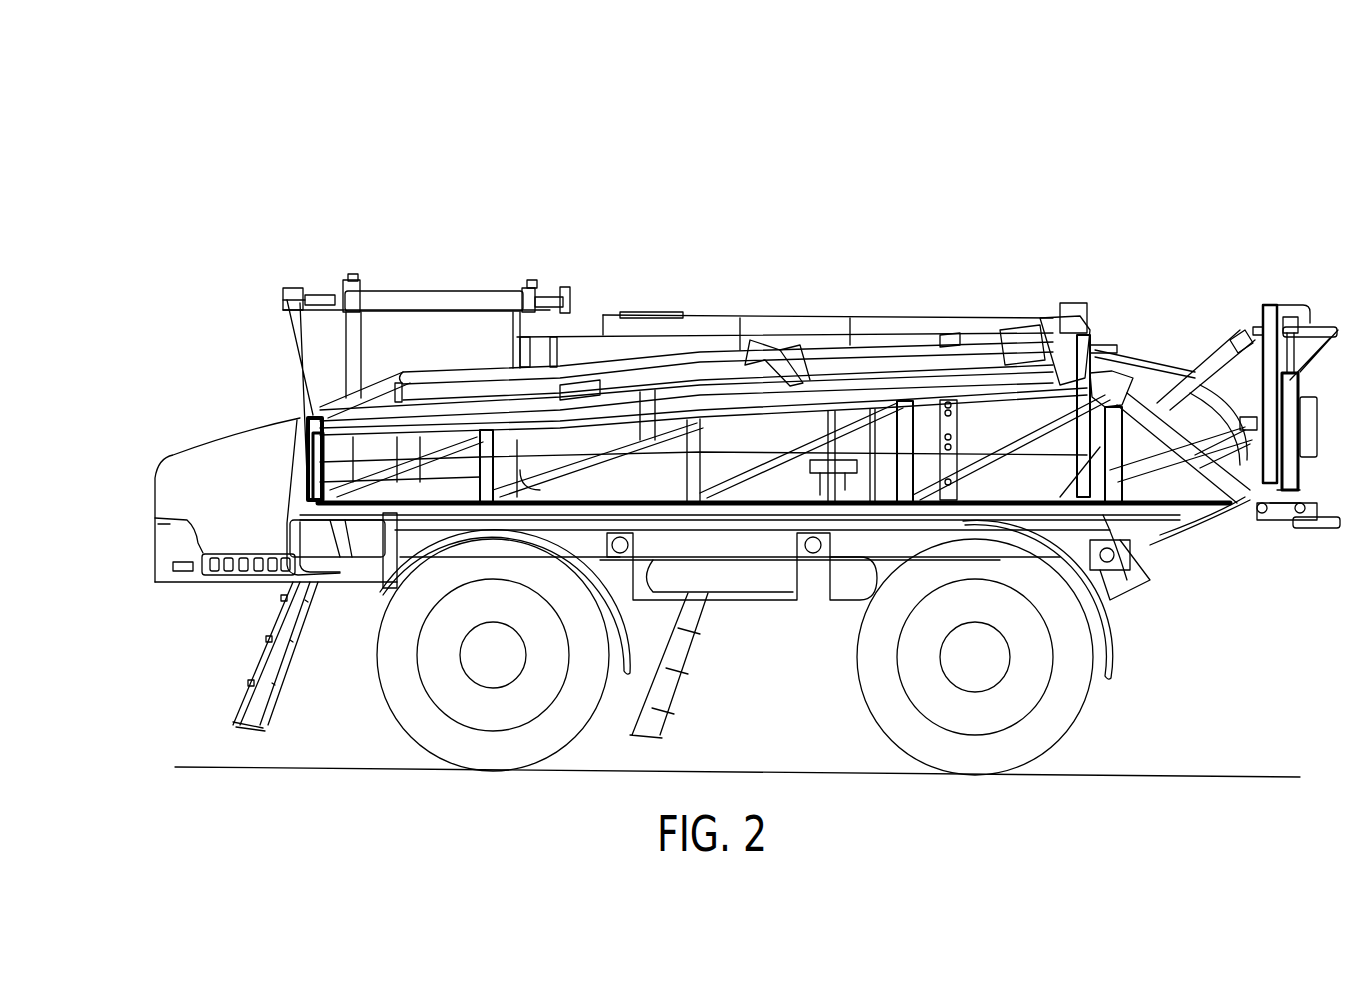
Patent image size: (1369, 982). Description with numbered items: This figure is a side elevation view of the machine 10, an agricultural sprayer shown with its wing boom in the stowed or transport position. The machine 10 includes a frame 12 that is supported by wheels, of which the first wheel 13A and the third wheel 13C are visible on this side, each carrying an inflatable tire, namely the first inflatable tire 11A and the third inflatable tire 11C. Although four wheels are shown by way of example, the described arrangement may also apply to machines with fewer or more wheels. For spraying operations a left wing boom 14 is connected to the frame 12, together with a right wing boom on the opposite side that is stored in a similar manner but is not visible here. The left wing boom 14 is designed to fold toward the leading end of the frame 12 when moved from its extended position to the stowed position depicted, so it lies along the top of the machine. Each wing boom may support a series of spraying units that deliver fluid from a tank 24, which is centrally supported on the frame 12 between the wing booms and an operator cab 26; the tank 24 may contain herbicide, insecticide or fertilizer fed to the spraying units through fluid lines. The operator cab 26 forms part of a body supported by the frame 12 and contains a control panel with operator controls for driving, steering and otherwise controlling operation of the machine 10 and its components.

The machine 10 is at (1092, 228).
The first inflatable tire 11A is at (417, 712).
The third inflatable tire 11C is at (1048, 720).
The frame 12 is at (745, 582).
The first wheel 13A is at (433, 653).
The third wheel 13C is at (1032, 660).
The left wing boom 14 is at (968, 288).
The tank 24 is at (655, 332).
The operator cab 26 is at (433, 287).